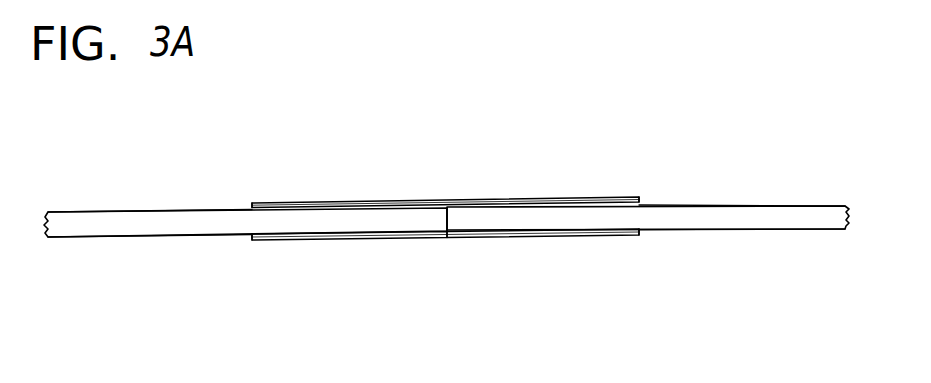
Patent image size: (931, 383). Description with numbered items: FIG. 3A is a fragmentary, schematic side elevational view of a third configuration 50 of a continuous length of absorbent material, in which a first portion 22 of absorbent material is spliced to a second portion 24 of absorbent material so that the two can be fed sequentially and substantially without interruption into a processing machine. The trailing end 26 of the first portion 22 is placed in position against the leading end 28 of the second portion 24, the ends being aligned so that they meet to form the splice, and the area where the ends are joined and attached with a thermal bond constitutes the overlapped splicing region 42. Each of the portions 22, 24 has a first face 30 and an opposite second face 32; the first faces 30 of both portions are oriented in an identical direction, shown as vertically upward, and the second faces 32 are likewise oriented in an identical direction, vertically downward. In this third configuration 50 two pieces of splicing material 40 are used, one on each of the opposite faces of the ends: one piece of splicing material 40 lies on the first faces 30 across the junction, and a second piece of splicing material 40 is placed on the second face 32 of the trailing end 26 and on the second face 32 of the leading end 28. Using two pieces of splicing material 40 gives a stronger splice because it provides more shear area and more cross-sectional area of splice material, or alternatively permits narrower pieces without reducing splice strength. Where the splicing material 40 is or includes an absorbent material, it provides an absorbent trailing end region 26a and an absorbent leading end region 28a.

The first portion of absorbent material 22 is at (131, 211).
The second portion of absorbent material 24 is at (774, 192).
The trailing end 26 is at (368, 231).
The absorbent trailing end region 26a is at (583, 243).
The leading end 28 is at (532, 231).
The absorbent leading end region 28a is at (305, 242).
The first face 30 is at (217, 210).
The second face 32 is at (205, 237).
The splicing material 40 is at (367, 200).
The overlapped splicing region 42 is at (294, 189).
The third configuration 50 is at (483, 150).